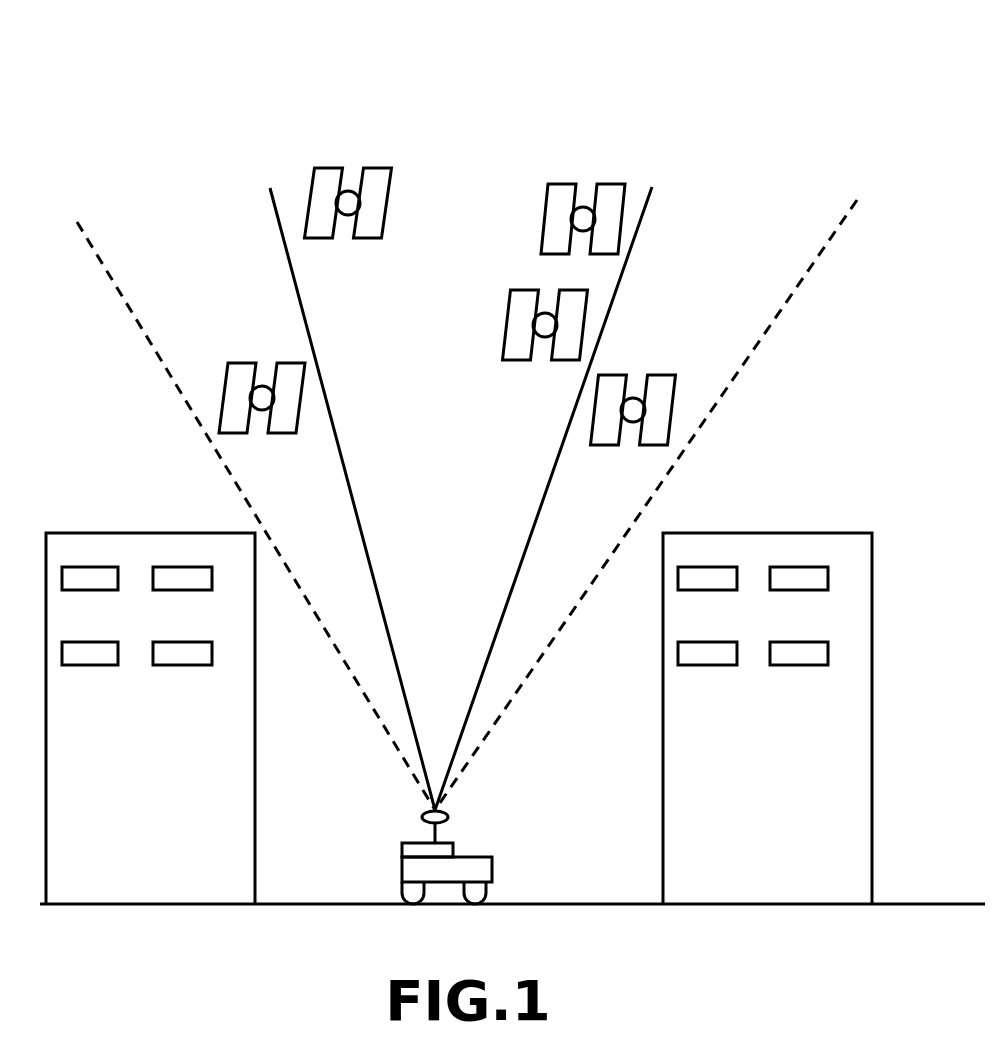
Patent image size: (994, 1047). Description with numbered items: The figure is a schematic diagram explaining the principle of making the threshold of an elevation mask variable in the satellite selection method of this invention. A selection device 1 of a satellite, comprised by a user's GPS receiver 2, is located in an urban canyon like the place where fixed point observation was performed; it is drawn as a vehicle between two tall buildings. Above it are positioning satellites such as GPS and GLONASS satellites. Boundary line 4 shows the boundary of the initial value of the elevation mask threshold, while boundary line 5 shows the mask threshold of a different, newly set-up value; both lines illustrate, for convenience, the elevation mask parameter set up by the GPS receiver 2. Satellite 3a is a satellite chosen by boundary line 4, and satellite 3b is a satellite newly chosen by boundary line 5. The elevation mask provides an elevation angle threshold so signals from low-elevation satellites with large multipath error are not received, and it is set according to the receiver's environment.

The selection device 1 is at (490, 827).
The GPS receiver 2 is at (423, 820).
The satellite chosen by boundary line 4 3a is at (375, 182).
The satellite newly chosen by boundary line 5 3b is at (663, 385).
The boundary line 4 is at (277, 218).
The boundary line 5 is at (97, 252).